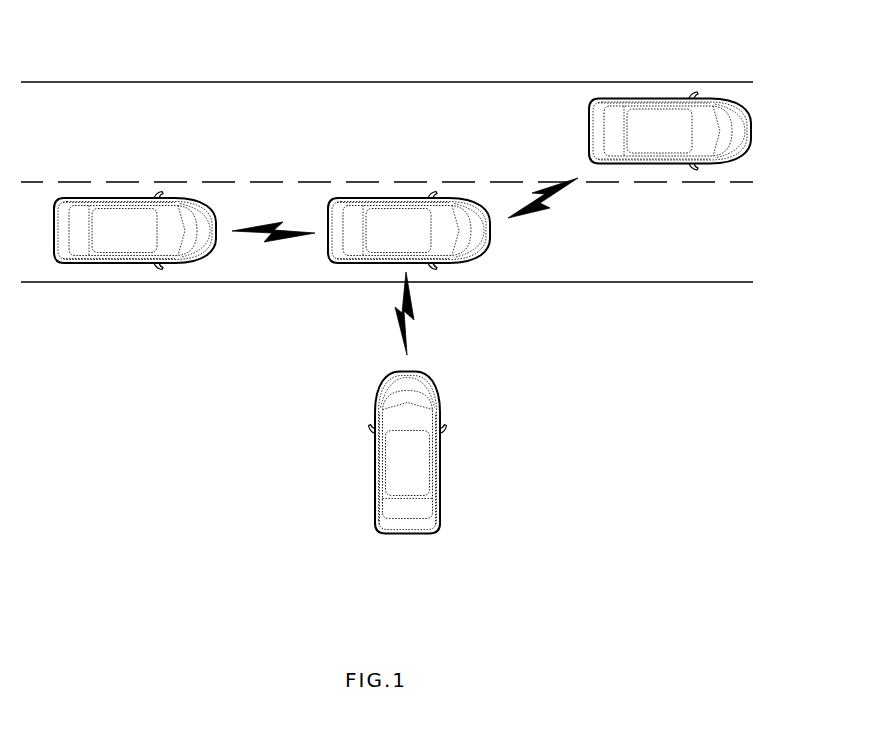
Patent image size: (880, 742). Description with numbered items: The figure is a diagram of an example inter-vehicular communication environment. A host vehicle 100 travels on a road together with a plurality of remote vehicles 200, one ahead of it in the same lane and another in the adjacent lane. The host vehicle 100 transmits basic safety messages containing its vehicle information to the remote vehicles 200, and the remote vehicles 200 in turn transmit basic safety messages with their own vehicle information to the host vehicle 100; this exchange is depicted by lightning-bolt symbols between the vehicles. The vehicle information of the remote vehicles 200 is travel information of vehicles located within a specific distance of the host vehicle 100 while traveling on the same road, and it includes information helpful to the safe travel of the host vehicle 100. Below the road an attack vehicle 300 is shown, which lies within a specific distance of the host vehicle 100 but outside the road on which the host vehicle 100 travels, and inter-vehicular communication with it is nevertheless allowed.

The host vehicle 100 is at (472, 266).
The remote vehicles 200 is at (125, 266).
The attack vehicle 300 is at (441, 458).